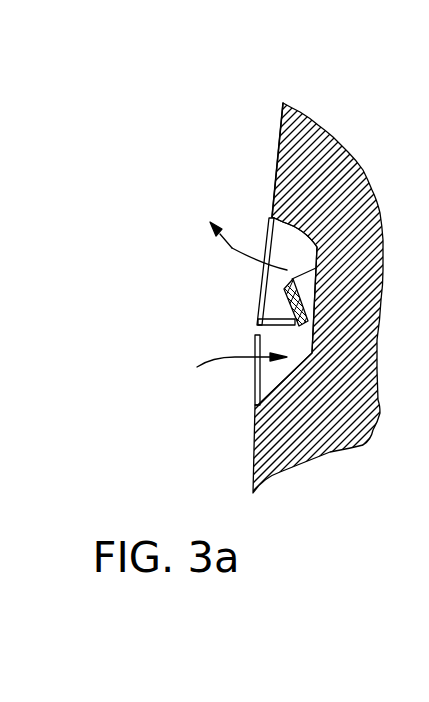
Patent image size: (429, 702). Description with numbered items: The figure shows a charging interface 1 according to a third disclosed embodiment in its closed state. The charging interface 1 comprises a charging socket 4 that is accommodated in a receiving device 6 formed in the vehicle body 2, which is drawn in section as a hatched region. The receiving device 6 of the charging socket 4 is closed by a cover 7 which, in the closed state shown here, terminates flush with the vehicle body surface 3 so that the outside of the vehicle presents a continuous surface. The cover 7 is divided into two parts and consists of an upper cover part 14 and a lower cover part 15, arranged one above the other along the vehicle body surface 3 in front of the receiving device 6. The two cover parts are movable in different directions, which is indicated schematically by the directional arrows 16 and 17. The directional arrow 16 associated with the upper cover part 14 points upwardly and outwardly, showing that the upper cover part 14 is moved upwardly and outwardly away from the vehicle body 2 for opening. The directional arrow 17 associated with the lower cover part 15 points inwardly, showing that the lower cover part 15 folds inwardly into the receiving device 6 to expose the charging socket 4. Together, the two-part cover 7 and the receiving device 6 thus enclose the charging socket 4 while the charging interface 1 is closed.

The charging interface 1 is at (208, 92).
The vehicle body 2 is at (303, 127).
The vehicle body surface 3 is at (277, 155).
The charging socket 4 is at (305, 288).
The receiving device 6 is at (300, 250).
The cover 7 is at (184, 334).
The upper cover part 14 is at (267, 239).
The lower cover part 15 is at (253, 382).
The directional arrow 16 is at (232, 248).
The directional arrow 17 is at (222, 358).